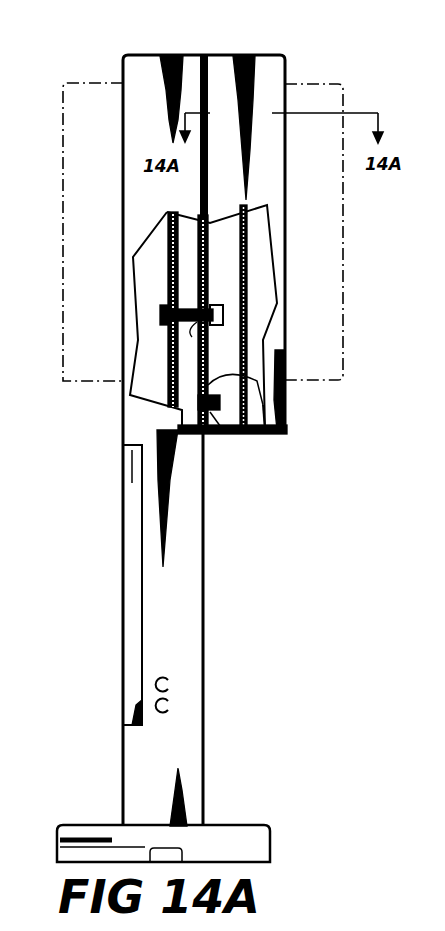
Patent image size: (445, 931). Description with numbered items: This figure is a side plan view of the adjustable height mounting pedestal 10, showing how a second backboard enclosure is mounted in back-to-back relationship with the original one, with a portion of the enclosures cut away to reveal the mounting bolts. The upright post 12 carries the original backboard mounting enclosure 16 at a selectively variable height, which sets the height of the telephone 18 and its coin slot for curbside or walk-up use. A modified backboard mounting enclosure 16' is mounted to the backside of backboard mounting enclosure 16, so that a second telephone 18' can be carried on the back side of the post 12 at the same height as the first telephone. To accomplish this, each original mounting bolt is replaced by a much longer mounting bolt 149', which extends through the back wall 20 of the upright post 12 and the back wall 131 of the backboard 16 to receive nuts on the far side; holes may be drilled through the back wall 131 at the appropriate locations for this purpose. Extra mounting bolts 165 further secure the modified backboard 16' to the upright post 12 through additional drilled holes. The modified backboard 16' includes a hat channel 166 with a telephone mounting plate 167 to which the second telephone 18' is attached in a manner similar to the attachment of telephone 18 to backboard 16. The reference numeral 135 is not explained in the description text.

The pedestal 10 is at (363, 478).
The upright post 12 is at (195, 490).
The backboard mounting enclosure 16 is at (232, 453).
The modified backboard mounting enclosure 16' is at (296, 439).
The telephone 18 is at (166, 440).
The second telephone 18' is at (347, 232).
The back wall of upright post 20 is at (220, 402).
The back wall of backboard 131 is at (198, 355).
The carrier body 135 is at (170, 288).
The mounting bolt 149' is at (246, 355).
The extra mounting bolt 165 is at (222, 408).
The hat channel 166 is at (250, 285).
The telephone mounting plate 167 is at (247, 248).